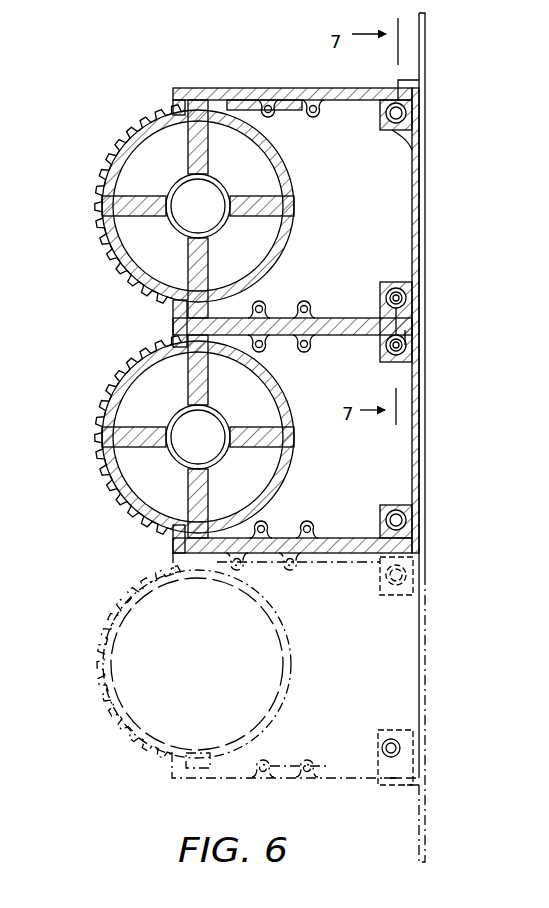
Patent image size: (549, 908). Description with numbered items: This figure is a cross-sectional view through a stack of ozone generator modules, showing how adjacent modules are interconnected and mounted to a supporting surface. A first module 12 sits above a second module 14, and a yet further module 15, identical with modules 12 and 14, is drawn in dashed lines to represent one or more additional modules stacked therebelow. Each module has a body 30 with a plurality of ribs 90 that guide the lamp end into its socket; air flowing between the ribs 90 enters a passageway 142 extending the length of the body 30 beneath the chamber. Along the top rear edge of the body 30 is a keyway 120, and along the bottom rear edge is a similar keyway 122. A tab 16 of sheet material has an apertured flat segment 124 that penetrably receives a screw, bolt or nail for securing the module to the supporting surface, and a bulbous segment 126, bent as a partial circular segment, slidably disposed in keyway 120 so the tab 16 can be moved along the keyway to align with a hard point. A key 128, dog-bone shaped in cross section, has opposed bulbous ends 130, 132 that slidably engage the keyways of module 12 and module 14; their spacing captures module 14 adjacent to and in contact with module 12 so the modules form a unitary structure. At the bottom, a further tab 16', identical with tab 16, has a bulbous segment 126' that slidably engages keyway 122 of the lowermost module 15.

The first module 12 is at (195, 78).
The second module 14 is at (133, 354).
The yet further module 15 is at (123, 745).
The tab 16 is at (448, 437).
The further tab 16' is at (431, 795).
The body 30 is at (258, 87).
The ribs 90 is at (187, 156).
The keyway 120 is at (412, 113).
The keyway 122 is at (406, 306).
The apertured flat segment 124 is at (428, 80).
The bulbous segment 126 is at (439, 153).
The bulbous segment 126' is at (433, 757).
The key 128 is at (400, 322).
The bulbous end 130 is at (402, 297).
The bulbous end 132 is at (405, 352).
The passageway 142 is at (178, 307).